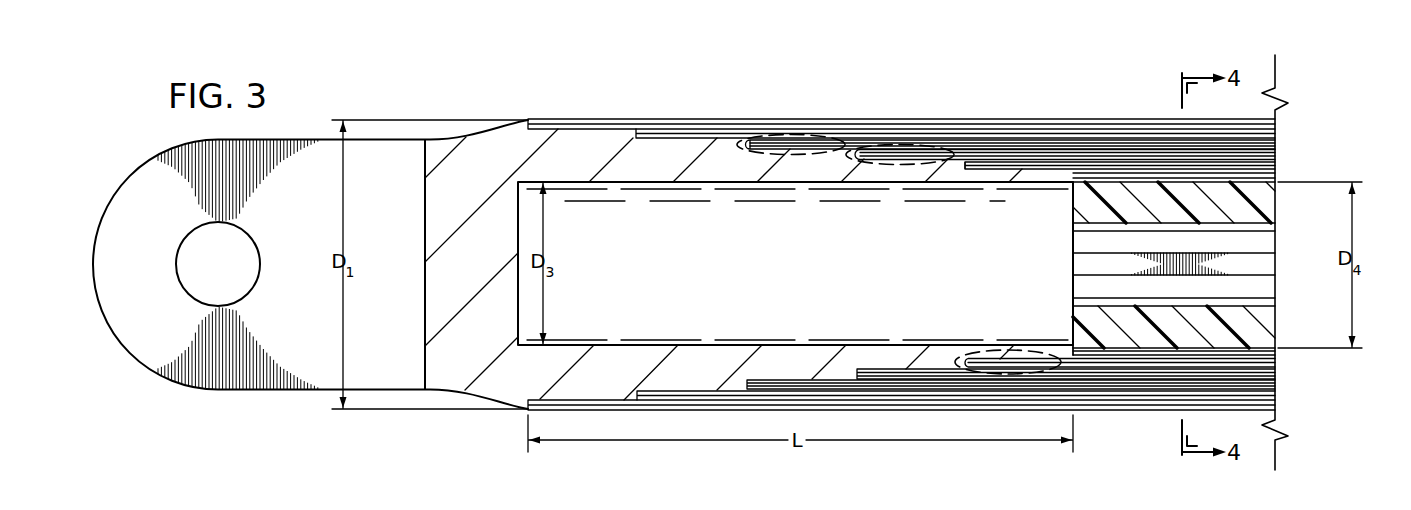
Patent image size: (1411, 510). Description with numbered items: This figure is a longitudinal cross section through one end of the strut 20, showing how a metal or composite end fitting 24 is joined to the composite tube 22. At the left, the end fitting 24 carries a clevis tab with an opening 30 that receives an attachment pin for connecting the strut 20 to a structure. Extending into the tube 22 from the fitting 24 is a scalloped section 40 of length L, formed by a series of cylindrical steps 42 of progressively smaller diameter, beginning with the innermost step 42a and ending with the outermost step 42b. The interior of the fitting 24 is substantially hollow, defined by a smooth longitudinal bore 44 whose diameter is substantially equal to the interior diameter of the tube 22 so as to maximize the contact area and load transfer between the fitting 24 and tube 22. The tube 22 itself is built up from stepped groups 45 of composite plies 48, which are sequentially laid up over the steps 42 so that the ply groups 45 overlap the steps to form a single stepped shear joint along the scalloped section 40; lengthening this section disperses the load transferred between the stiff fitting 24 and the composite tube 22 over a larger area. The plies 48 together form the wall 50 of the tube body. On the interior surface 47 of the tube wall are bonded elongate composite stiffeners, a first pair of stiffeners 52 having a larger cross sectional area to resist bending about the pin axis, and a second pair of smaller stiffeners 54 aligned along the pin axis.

The strut 20 is at (689, 64).
The tube 22 is at (1100, 108).
The end fitting 24 is at (416, 217).
The opening 30 is at (180, 258).
The scalloped section 40 is at (614, 135).
The cylindrical steps 42 is at (722, 143).
The innermost step 42a is at (977, 190).
The outermost step 42b is at (648, 158).
The bore 44 is at (847, 278).
The stepped ply groups 45 is at (818, 156).
The interior surface 47 is at (1260, 347).
The composite plies 48 is at (884, 126).
The wall 50 is at (988, 118).
The first pair of stiffeners 52 is at (1087, 202).
The second pair of stiffeners 54 is at (1087, 262).